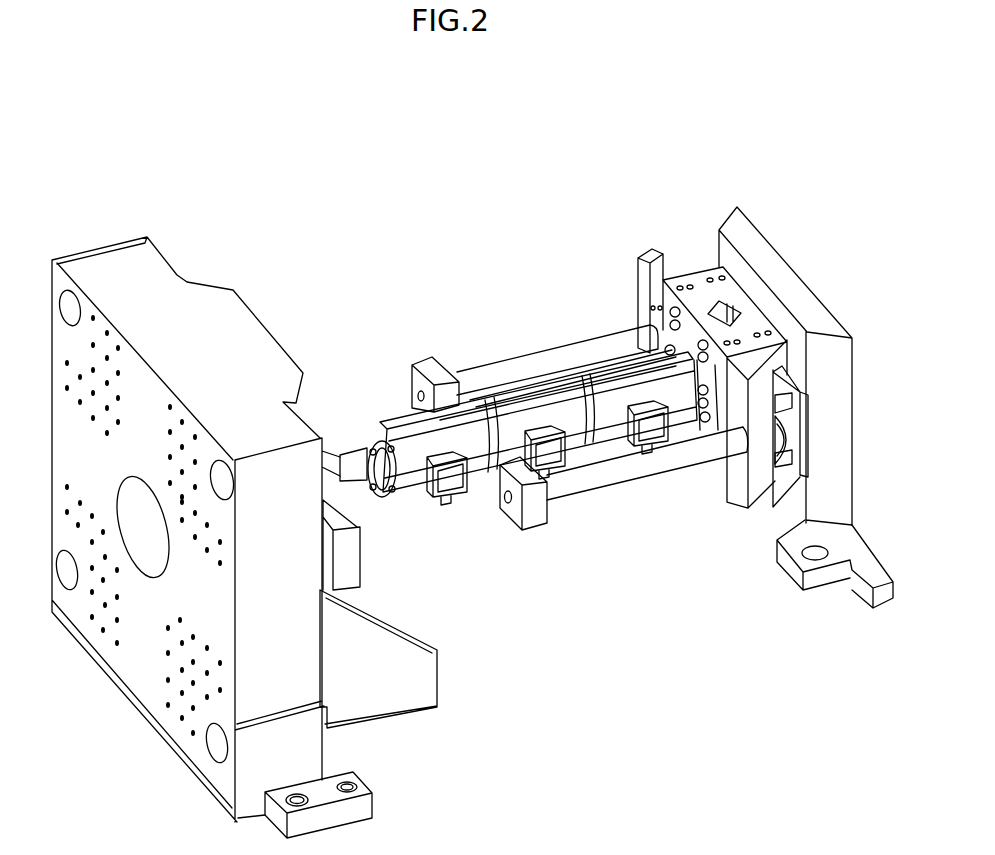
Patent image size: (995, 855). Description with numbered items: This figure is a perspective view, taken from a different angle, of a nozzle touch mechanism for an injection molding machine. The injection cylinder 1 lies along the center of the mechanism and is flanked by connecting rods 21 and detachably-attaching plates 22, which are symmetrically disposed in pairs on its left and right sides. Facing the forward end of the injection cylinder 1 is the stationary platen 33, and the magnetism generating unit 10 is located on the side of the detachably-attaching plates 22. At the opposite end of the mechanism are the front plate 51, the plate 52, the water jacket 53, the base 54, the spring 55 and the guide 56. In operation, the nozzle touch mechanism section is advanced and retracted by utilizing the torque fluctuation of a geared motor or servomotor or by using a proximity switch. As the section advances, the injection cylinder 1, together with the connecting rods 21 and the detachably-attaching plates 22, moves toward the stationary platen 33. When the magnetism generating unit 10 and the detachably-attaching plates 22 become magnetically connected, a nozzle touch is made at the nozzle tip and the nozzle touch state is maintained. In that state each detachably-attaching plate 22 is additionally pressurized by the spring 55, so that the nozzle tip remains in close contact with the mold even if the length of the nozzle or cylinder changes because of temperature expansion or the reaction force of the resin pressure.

The injection cylinder 1 is at (407, 417).
The magnetism generating unit 10 is at (347, 570).
The connecting rods 21 is at (537, 352).
The detachably-attaching plates 22 is at (415, 363).
The stationary platen 33 is at (122, 237).
The front plate 51 is at (753, 226).
The plate 52 is at (805, 473).
The water jacket 53 is at (705, 272).
The base 54 is at (638, 270).
The spring 55 is at (780, 453).
The guide 56 is at (773, 405).